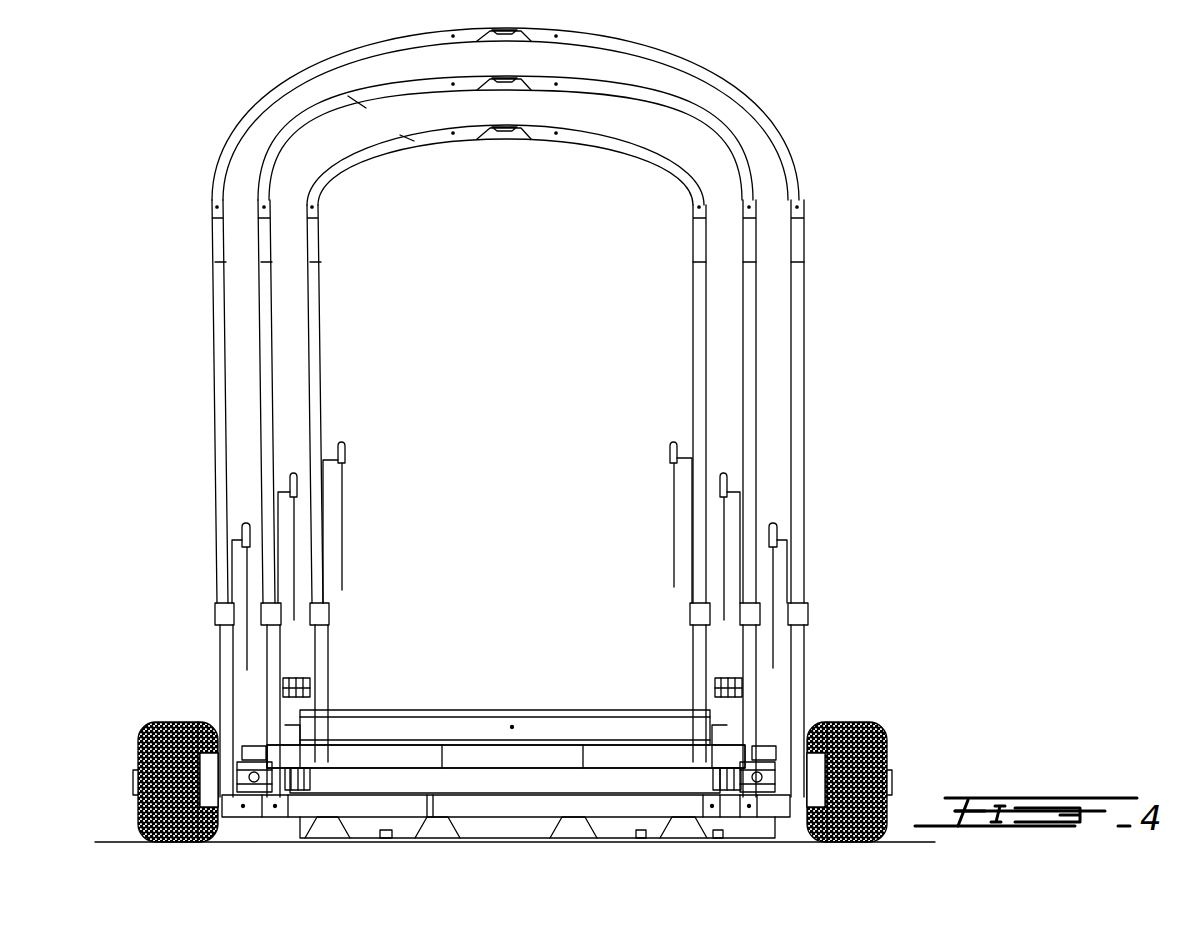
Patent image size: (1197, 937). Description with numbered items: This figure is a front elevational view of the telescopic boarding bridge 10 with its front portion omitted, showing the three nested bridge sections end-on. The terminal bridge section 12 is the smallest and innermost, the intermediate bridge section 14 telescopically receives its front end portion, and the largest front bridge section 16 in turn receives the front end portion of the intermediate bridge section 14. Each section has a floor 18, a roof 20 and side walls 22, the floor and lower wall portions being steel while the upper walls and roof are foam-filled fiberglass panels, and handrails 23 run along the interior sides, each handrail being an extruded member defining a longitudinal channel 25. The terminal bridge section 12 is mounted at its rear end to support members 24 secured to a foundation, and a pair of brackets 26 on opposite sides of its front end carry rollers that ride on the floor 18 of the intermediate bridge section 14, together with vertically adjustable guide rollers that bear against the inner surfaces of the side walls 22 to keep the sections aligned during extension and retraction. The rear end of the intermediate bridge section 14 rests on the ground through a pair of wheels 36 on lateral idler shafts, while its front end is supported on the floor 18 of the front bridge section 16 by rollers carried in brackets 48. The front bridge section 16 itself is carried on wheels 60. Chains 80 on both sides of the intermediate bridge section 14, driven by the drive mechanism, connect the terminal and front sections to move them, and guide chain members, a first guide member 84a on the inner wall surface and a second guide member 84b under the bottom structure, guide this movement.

The telescopic boarding bridge 10 is at (840, 166).
The terminal bridge section 12 is at (323, 322).
The intermediate bridge section 14 is at (663, 100).
The front bridge section 16 is at (266, 88).
The floor 18 is at (720, 768).
The roof 20 is at (407, 137).
The side walls 22 is at (305, 300).
The handrails 23 is at (338, 443).
The support members 24 is at (362, 820).
The longitudinal channel 25 is at (250, 545).
The brackets 26 is at (318, 728).
The wheels 36 is at (212, 722).
The brackets 48 is at (252, 748).
The wheels 60 is at (148, 733).
The chains 80 is at (332, 712).
The first guide member 84a is at (310, 684).
The second guide member 84b is at (312, 780).